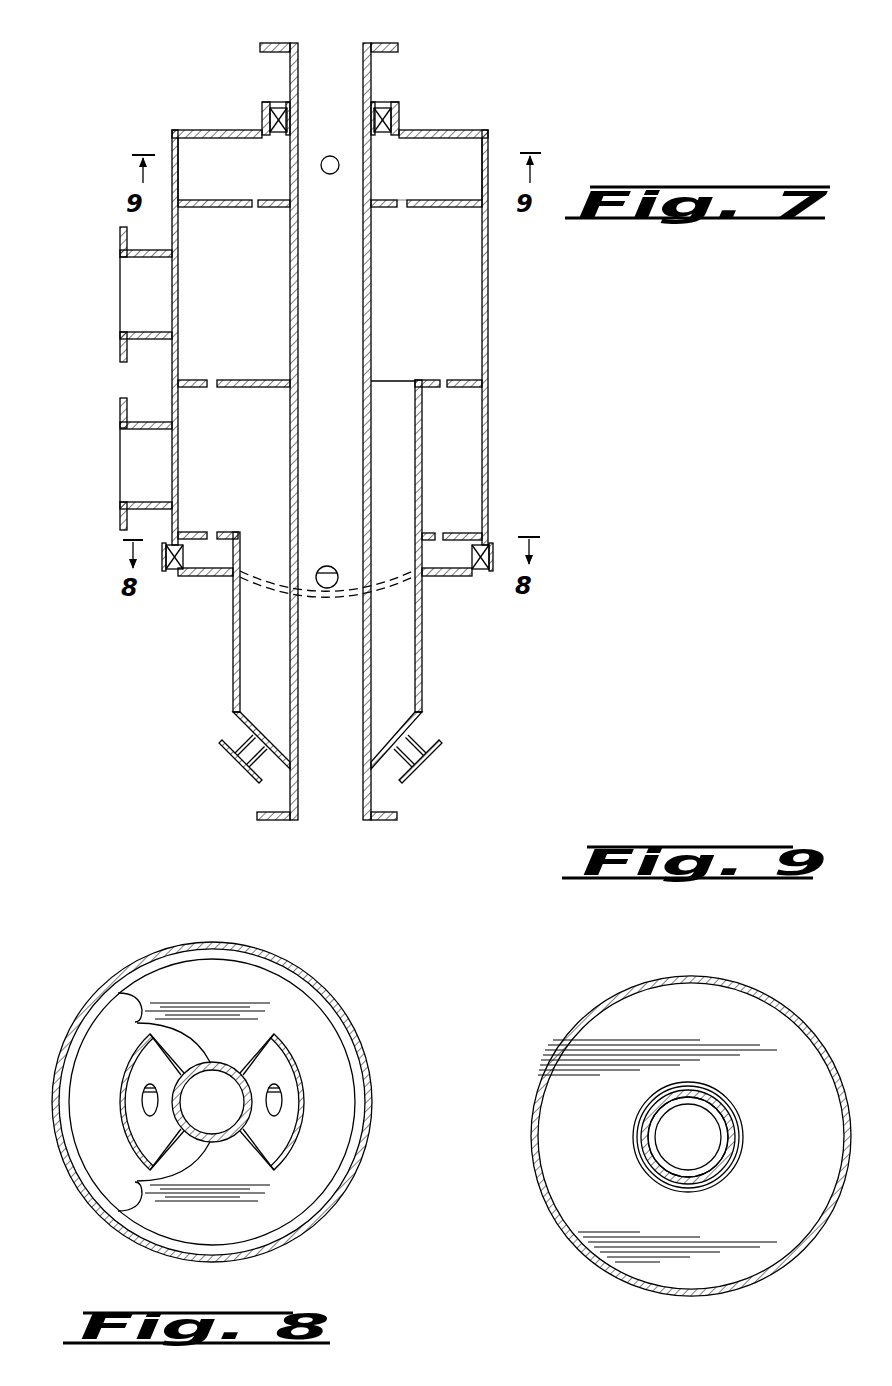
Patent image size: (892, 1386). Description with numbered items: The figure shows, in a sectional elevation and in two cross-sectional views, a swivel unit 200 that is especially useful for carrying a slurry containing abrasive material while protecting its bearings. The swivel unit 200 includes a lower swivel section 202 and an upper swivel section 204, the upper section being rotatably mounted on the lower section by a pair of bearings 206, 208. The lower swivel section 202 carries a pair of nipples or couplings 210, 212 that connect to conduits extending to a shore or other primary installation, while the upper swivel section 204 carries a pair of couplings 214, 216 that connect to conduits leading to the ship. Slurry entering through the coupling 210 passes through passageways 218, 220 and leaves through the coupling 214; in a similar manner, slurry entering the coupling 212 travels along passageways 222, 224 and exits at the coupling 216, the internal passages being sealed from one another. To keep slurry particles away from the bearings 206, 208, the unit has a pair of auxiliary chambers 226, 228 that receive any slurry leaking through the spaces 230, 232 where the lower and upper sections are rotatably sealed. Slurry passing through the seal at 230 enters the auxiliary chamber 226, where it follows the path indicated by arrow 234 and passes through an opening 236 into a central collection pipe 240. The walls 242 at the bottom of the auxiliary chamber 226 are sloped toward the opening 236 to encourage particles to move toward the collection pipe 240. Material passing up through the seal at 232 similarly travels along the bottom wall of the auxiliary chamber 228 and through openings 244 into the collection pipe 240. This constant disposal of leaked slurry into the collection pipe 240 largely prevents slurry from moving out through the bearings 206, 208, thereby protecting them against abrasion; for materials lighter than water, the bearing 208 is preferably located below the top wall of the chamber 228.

In FIG. 7, the swivel unit 200 is at (492, 327).
In FIG. 8, the swivel unit 200 is at (323, 982).
In FIG. 9, the swivel unit 200 is at (816, 1029).
In FIG. 7, the lower swivel section 202 is at (423, 705).
In FIG. 8, the lower swivel section 202 is at (359, 1032).
In FIG. 7, the upper swivel section 204 is at (489, 277).
In FIG. 9, the upper swivel section 204 is at (755, 963).
In FIG. 7, the bearing 206 is at (496, 550).
In FIG. 7, the bearing 208 is at (392, 122).
In FIG. 7, the coupling 210 is at (240, 762).
In FIG. 8, the coupling 210 is at (143, 1090).
In FIG. 7, the coupling 212 is at (412, 760).
In FIG. 8, the coupling 212 is at (281, 1113).
In FIG. 7, the coupling 214 is at (122, 467).
In FIG. 7, the coupling 216 is at (122, 295).
In FIG. 7, the passageway 218 is at (250, 652).
In FIG. 7, the passageway 220 is at (240, 467).
In FIG. 7, the passageway 222 is at (402, 667).
In FIG. 7, the passageway 224 is at (436, 311).
In FIG. 7, the auxiliary chamber 226 is at (440, 558).
In FIG. 7, the auxiliary chamber 228 is at (454, 184).
In FIG. 9, the auxiliary chamber 228 is at (804, 1126).
In FIG. 7, the space 230 is at (442, 535).
In FIG. 7, the space 232 is at (405, 210).
In FIG. 8, the arrow 234 is at (118, 993).
In FIG. 7, the opening 236 is at (331, 566).
In FIG. 8, the opening 236 is at (213, 1130).
In FIG. 7, the collection pipe 240 is at (322, 807).
In FIG. 8, the collection pipe 240 is at (214, 1077).
In FIG. 9, the collection pipe 240 is at (717, 1112).
In FIG. 7, the walls 242 is at (266, 583).
In FIG. 8, the walls 242 is at (302, 1163).
In FIG. 7, the openings 244 is at (291, 168).
In FIG. 9, the openings 244 is at (697, 1188).